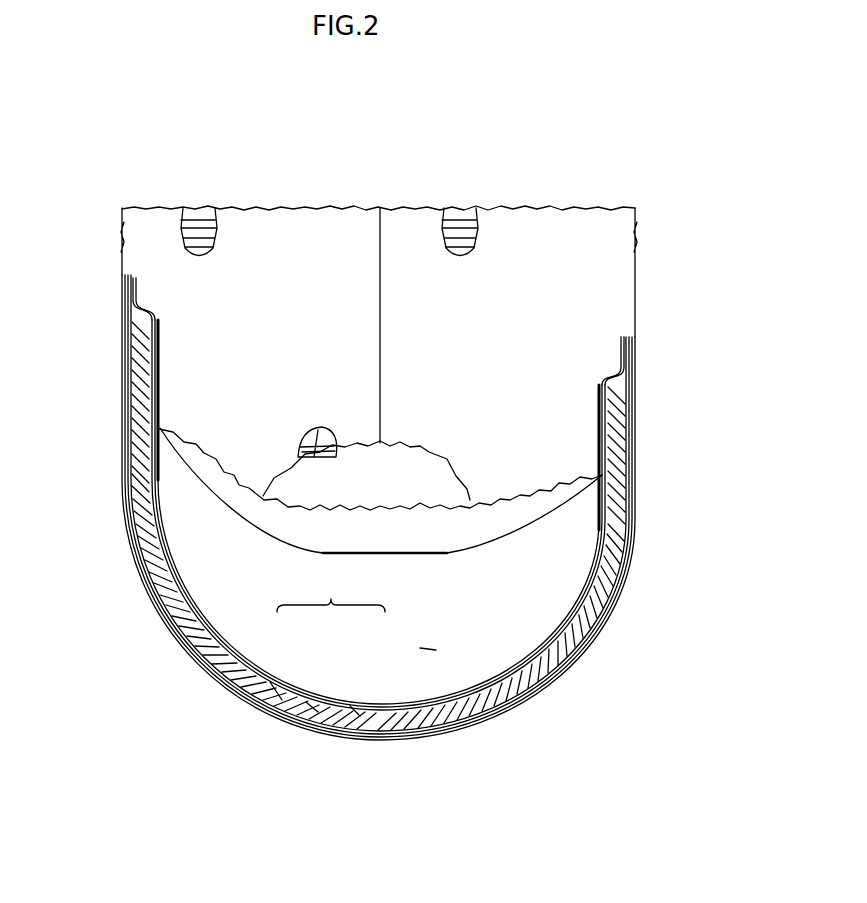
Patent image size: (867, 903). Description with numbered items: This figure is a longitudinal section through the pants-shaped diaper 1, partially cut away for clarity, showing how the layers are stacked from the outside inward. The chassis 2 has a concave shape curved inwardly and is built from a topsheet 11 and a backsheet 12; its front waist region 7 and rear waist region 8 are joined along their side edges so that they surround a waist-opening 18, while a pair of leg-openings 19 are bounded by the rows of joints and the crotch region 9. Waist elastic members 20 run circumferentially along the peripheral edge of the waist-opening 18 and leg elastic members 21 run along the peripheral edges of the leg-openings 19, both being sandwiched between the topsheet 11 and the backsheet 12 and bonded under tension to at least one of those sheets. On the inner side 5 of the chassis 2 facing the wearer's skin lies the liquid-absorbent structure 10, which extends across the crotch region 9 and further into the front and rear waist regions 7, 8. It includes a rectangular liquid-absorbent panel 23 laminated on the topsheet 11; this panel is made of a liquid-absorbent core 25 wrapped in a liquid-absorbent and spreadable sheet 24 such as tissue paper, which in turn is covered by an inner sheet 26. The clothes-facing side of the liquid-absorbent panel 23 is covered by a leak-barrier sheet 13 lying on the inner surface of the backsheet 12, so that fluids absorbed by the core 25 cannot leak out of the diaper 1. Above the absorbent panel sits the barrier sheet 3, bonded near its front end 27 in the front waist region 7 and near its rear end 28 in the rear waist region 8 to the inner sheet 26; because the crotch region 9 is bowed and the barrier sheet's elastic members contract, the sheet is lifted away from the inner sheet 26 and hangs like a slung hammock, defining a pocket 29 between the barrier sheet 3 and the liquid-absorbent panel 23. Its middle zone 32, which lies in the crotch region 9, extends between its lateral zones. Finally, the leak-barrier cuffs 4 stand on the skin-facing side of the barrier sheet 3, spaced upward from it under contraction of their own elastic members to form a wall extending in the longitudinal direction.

The diaper 1 is at (643, 84).
The chassis 2 is at (610, 187).
The barrier sheet 3 is at (235, 510).
The leak-barrier cuffs 4 is at (218, 480).
The inner side 5 is at (420, 332).
The front waist region 7 is at (104, 246).
The rear waist region 8 is at (656, 247).
The crotch region 9 is at (284, 731).
The liquid-absorbent structure 10 is at (194, 593).
The topsheet 11 is at (138, 552).
The backsheet 12 is at (148, 598).
The leak-barrier sheet 13 is at (168, 632).
The waist-opening 18 is at (335, 252).
The leg-openings 19 is at (420, 472).
The waist elastic members 20 is at (200, 240).
The leg elastic members 21 is at (315, 430).
The liquid-absorbent panel 23 is at (331, 591).
The liquid-absorbent and spreadable sheet 24 is at (270, 682).
The liquid-absorbent core 25 is at (306, 702).
The inner sheet 26 is at (350, 706).
The front end 27 is at (163, 380).
The rear end 28 is at (600, 418).
The pocket 29 is at (428, 648).
The middle zone 32 is at (425, 553).